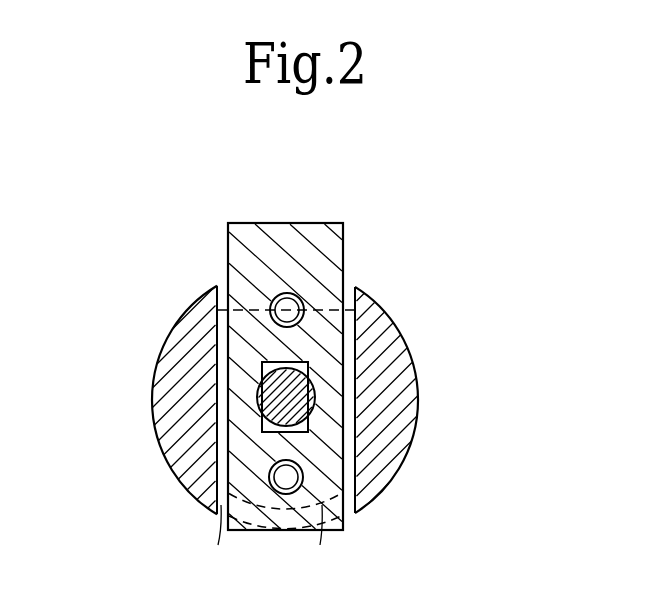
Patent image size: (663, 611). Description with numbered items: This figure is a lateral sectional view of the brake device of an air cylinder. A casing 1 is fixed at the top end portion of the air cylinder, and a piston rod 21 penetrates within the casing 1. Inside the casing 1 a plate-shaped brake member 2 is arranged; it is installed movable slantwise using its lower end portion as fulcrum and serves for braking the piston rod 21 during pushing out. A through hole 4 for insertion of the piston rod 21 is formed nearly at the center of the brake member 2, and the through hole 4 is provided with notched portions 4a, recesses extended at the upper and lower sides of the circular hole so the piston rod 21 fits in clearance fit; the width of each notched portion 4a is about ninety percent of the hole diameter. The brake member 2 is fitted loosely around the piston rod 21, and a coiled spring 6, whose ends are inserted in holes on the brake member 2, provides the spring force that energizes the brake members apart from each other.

The casing 1 is at (377, 317).
The brake member 2 is at (312, 232).
The through hole 4 is at (316, 387).
The notched portion 4a is at (312, 362).
The coiled spring 6 is at (280, 293).
The piston rod 21 is at (272, 402).